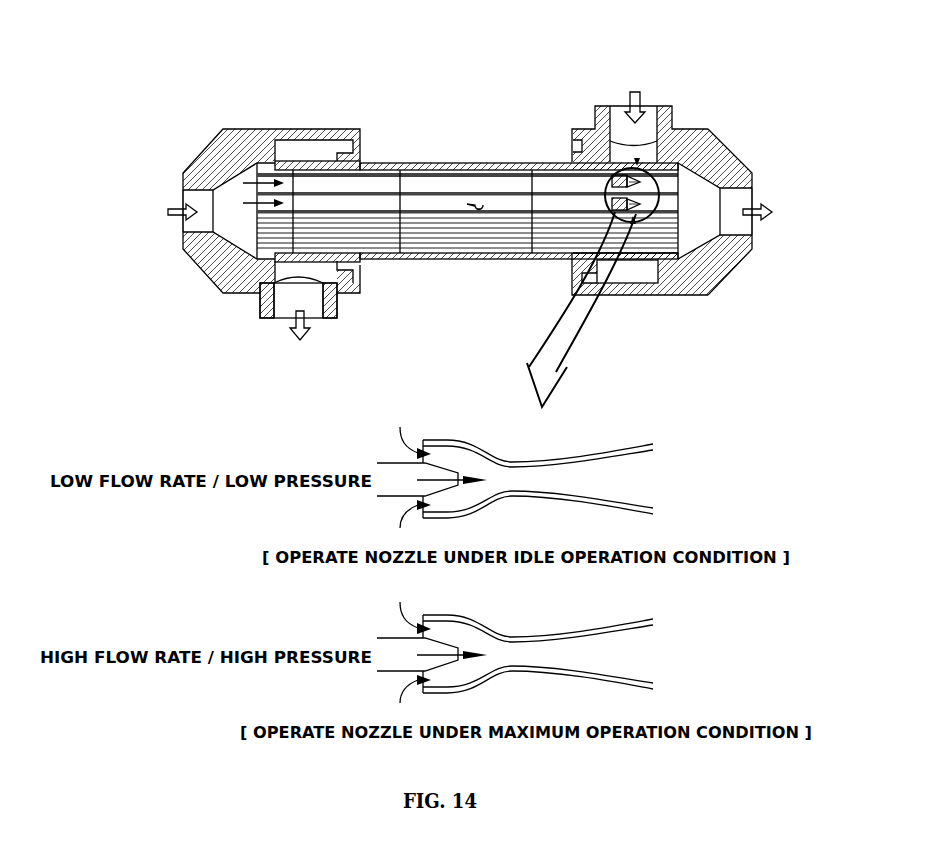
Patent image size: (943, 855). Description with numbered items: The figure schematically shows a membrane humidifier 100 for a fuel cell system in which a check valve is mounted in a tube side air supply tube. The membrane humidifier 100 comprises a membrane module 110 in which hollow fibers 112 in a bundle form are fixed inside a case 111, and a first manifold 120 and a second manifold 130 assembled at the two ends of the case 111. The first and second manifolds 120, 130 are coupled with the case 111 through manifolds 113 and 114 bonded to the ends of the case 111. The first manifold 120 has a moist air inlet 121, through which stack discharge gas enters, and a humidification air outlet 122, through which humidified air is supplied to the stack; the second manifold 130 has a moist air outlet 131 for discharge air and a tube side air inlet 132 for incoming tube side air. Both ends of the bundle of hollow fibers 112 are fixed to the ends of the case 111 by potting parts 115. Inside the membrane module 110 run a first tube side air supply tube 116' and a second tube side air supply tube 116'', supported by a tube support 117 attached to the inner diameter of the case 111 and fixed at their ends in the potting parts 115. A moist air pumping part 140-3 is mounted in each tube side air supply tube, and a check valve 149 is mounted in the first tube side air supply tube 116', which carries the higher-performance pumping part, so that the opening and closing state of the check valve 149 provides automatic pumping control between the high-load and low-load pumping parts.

The membrane humidifier 100 is at (275, 99).
The membrane module 110 is at (485, 155).
The case 111 is at (390, 160).
The hollow fibers 112 is at (418, 242).
The manifold 113 is at (625, 262).
The manifold 114 is at (347, 140).
The potting parts 115 is at (692, 270).
The first tube side air supply tube 116' is at (467, 261).
The second tube side air supply tube 116'' is at (460, 149).
The tube support 117 is at (532, 162).
The first manifold 120 is at (723, 168).
The moist air inlet 121 is at (595, 125).
The humidification air outlet 122 is at (746, 222).
The second manifold 130 is at (213, 150).
The moist air outlet 131 is at (260, 300).
The tube side air inlet 132 is at (188, 230).
The check valve 149 is at (479, 212).
The moist air pumping part 140-3 is at (641, 174).